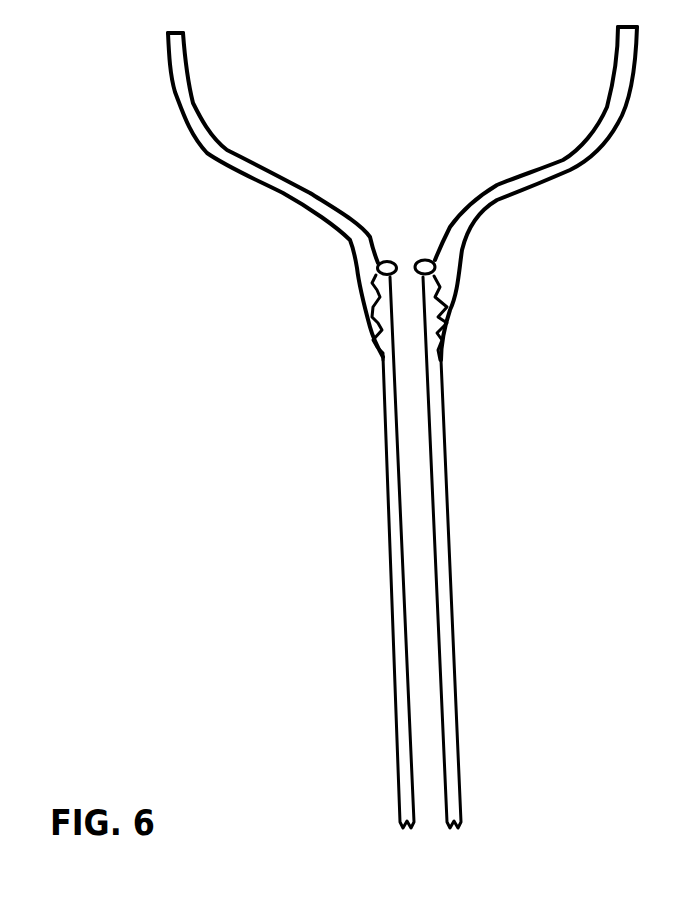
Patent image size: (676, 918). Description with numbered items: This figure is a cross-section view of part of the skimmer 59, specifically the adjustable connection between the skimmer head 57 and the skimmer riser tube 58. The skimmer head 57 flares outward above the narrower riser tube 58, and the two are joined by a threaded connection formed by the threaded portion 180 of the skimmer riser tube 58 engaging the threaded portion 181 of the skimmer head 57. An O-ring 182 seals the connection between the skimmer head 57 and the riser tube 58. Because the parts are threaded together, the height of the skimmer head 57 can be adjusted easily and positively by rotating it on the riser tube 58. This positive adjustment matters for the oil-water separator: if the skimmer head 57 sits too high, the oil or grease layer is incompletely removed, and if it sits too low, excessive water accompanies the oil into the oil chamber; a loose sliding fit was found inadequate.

The skimmer head 57 is at (173, 88).
The skimmer riser tube 58 is at (393, 641).
The skimmer 59 is at (386, 471).
The threaded portion of skimmer riser tube 180 is at (380, 346).
The threaded portion of skimmer head 181 is at (455, 270).
The O-ring 182 is at (418, 252).